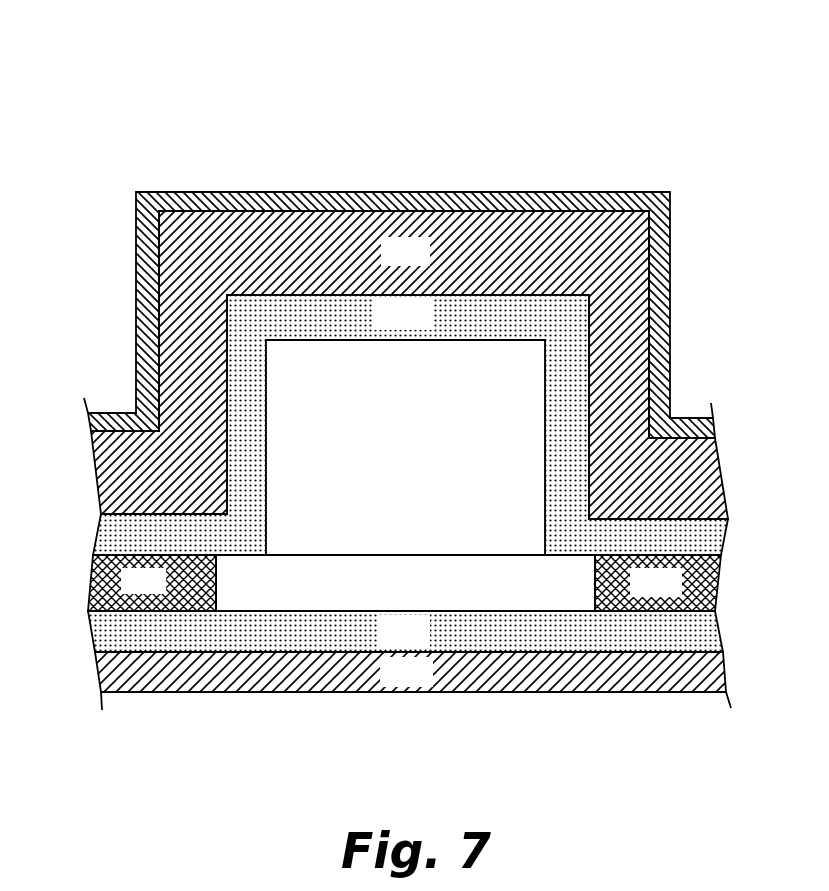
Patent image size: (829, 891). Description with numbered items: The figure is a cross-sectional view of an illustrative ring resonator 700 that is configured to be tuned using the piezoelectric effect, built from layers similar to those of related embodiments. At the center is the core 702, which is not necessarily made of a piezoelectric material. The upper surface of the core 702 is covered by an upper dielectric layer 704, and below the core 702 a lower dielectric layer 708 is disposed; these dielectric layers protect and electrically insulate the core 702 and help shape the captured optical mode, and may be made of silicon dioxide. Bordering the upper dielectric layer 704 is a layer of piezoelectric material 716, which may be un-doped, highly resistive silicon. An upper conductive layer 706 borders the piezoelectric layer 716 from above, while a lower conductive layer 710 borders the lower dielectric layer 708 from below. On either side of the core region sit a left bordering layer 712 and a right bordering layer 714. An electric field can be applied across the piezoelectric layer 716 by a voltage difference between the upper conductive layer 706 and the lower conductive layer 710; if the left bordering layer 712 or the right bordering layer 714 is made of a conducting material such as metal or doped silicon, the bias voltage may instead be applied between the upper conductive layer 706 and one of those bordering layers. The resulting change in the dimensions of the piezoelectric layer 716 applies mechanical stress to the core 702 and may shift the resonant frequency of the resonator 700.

The ring resonator 700 is at (112, 102).
The core 702 is at (412, 496).
The upper dielectric layer 704 is at (413, 321).
The upper conductive layer 706 is at (457, 193).
The lower dielectric layer 708 is at (413, 635).
The lower conductive layer 710 is at (413, 674).
The left bordering layer 712 is at (152, 583).
The right bordering layer 714 is at (667, 586).
The piezoelectric layer 716 is at (413, 254).